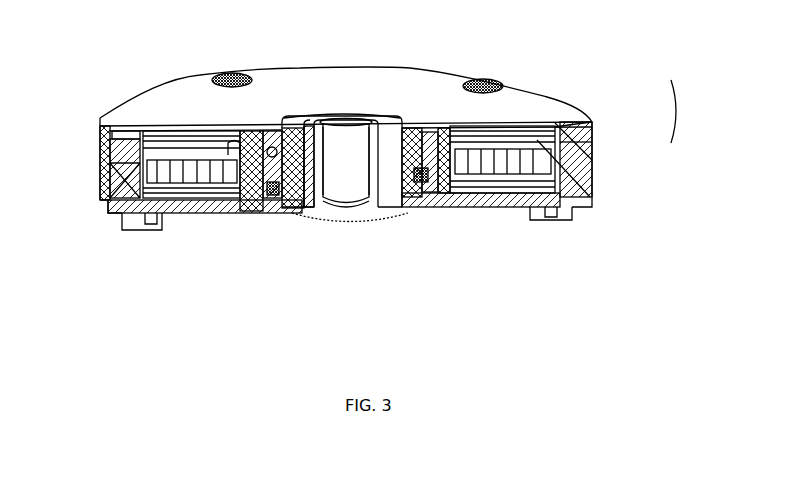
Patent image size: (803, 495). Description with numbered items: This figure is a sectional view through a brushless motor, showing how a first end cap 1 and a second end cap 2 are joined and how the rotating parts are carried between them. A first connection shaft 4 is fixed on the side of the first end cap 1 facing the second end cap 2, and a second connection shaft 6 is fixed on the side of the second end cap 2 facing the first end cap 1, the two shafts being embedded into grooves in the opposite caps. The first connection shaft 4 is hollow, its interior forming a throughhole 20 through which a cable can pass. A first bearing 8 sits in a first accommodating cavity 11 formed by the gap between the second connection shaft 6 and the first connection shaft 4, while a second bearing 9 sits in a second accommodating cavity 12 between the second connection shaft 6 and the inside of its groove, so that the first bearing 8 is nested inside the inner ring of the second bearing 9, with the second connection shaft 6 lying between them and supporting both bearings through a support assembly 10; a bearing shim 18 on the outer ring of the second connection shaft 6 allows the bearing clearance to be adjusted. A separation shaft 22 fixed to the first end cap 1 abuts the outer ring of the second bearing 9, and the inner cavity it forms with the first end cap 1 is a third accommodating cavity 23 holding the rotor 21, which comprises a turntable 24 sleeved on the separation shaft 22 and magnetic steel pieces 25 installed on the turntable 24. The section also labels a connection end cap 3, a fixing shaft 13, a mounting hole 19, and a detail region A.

The first end cap 1 is at (185, 214).
The second end cap 2 is at (173, 97).
The connection end cap 3 is at (100, 162).
The first connection shaft 4 is at (317, 212).
The second connection shaft 6 is at (268, 132).
The first bearing 8 is at (285, 214).
The second bearing 9 is at (238, 214).
The support assembly 10 is at (383, 208).
The first accommodating cavity 11 is at (403, 197).
The second accommodating cavity 12 is at (457, 207).
The fixing shaft 13 is at (405, 112).
The bearing shim 18 is at (437, 217).
The mounting hole 19 is at (325, 112).
The throughhole 20 is at (352, 130).
The rotor 21 is at (685, 111).
The separation shaft 22 is at (212, 78).
The third accommodating cavity 23 is at (101, 120).
The turntable 24 is at (592, 140).
The magnetic steel piece 25 is at (585, 112).
The region A is at (440, 118).